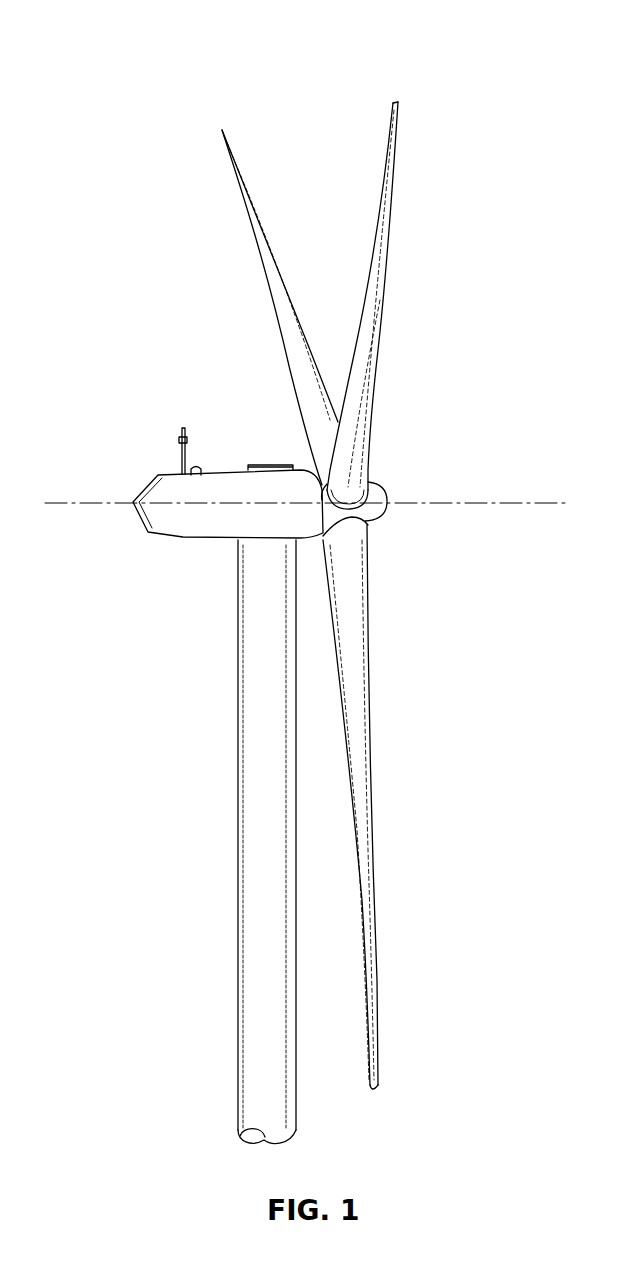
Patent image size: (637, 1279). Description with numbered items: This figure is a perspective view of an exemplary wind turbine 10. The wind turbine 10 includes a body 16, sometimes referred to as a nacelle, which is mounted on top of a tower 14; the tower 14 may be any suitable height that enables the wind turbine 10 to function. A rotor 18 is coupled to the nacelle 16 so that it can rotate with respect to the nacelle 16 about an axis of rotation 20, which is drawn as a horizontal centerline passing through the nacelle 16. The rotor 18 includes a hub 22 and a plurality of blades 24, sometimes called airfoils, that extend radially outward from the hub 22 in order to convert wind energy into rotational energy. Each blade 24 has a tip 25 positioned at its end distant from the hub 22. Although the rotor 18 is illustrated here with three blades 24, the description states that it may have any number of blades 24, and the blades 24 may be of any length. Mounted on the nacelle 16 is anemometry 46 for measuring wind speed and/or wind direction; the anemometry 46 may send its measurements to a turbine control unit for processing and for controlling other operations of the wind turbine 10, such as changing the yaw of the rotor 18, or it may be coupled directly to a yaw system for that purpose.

The wind turbine 10 is at (90, 152).
The tower 14 is at (238, 673).
The body 16 is at (180, 538).
The rotor 18 is at (378, 562).
The axis of rotation 20 is at (493, 500).
The hub 22 is at (380, 518).
The blade 24 is at (253, 230).
The tip 25 is at (397, 101).
The anemometry 46 is at (180, 437).